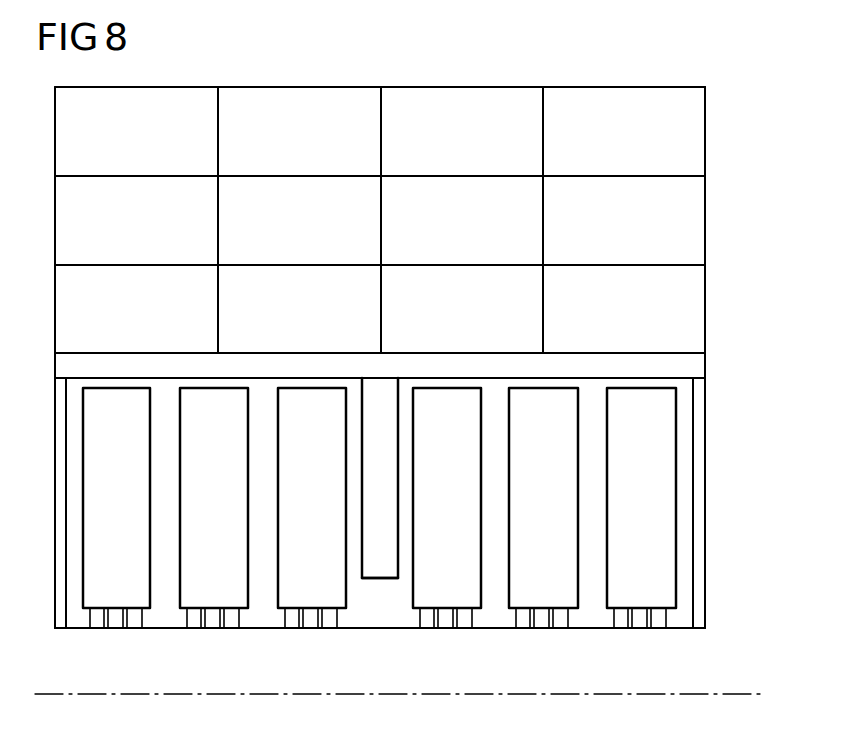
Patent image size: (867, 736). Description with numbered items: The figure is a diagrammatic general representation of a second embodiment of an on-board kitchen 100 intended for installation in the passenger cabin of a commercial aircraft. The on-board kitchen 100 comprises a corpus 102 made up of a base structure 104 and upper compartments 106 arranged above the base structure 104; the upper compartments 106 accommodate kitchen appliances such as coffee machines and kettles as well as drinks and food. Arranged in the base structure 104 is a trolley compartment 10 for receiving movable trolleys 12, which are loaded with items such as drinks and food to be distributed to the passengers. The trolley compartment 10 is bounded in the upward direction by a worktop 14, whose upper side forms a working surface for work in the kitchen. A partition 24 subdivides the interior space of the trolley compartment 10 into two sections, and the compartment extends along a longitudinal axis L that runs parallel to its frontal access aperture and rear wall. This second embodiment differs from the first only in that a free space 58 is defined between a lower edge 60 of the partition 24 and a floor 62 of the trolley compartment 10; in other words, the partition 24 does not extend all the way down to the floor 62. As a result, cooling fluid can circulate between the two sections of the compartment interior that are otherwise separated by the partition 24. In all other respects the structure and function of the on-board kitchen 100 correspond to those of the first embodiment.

The on-board kitchen 100 is at (748, 161).
The corpus 102 is at (705, 256).
The upper compartments 106 is at (626, 116).
The worktop 14 is at (685, 364).
The trolley compartment 10 is at (685, 400).
The base structure 104 is at (705, 472).
The partition 24 is at (381, 403).
The lower edge 60 is at (379, 578).
The free space 58 is at (377, 606).
The floor 62 is at (590, 628).
The trolleys 12 is at (119, 597).
The longitudinal axis L is at (742, 693).